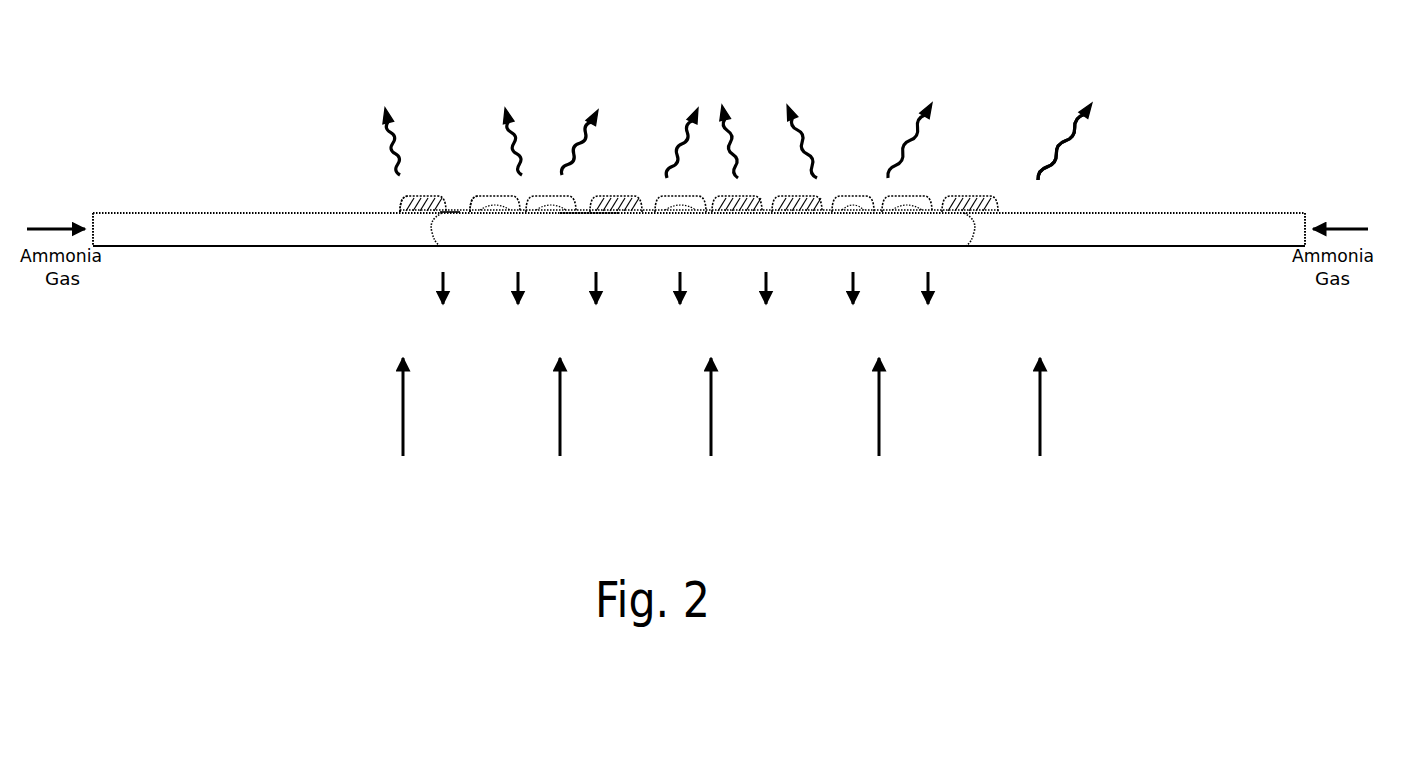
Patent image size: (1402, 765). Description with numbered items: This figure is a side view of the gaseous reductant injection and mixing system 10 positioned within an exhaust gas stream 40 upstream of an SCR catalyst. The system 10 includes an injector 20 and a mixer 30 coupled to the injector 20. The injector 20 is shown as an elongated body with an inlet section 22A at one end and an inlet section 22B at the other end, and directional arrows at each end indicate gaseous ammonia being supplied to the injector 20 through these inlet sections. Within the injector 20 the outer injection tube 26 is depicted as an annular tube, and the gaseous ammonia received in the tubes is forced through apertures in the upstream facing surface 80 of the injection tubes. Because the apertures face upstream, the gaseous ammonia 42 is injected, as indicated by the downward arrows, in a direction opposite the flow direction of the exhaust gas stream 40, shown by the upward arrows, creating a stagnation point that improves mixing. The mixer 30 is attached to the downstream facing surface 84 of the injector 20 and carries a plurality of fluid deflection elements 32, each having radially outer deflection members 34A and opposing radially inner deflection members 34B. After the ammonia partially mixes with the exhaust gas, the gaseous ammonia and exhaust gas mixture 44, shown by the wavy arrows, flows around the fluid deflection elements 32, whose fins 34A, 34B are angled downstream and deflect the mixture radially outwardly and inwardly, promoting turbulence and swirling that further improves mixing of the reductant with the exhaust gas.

The gaseous reductant injection and mixing system 10 is at (1072, 162).
The injector 20 is at (1058, 252).
The inlet section 22A is at (190, 216).
The inlet section 22B is at (1150, 226).
The outer injection tube 26 is at (944, 240).
The mixer 30 is at (845, 188).
The fluid deflection element 32 is at (447, 196).
The radially outer deflection member 34A is at (418, 198).
The radially inner deflection member 34B is at (478, 198).
The exhaust gas stream 40 is at (365, 458).
The gaseous ammonia 42 is at (402, 315).
The gaseous ammonia and exhaust gas mixture 44 is at (365, 175).
The upstream facing surface 80 is at (905, 245).
The downstream facing surface 84 is at (586, 212).